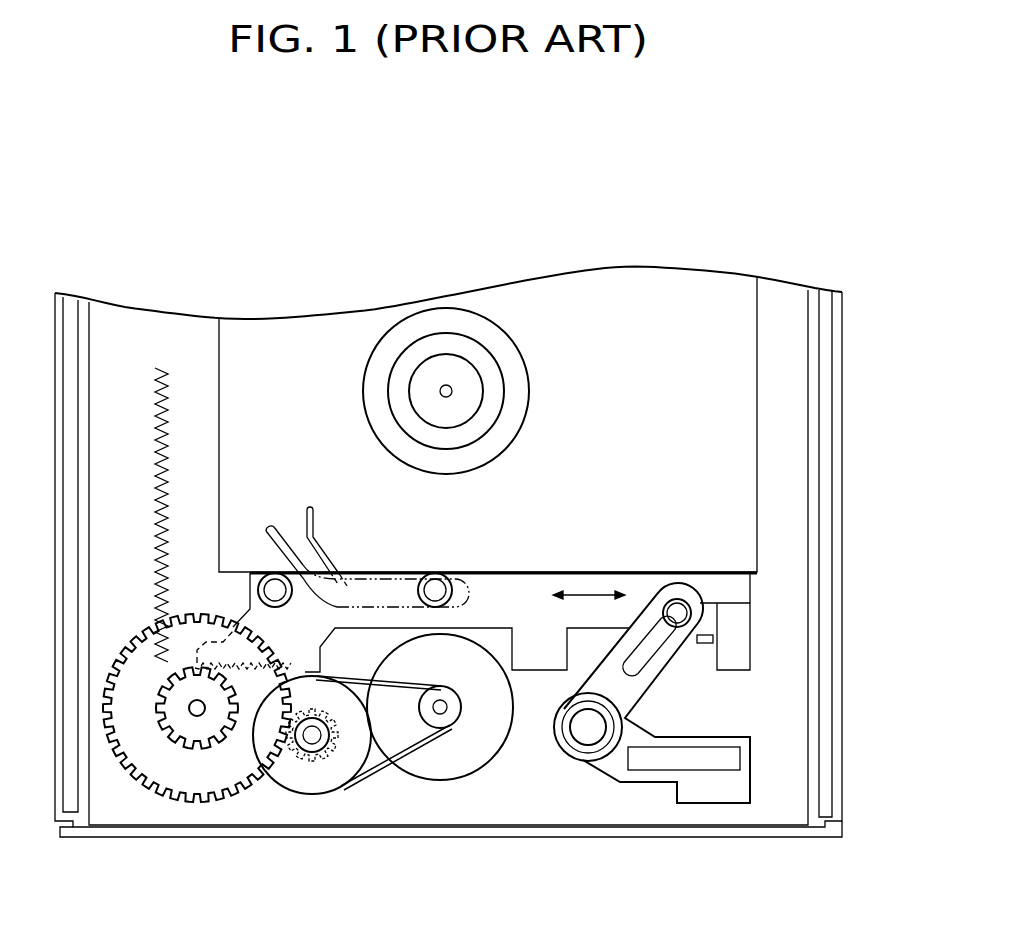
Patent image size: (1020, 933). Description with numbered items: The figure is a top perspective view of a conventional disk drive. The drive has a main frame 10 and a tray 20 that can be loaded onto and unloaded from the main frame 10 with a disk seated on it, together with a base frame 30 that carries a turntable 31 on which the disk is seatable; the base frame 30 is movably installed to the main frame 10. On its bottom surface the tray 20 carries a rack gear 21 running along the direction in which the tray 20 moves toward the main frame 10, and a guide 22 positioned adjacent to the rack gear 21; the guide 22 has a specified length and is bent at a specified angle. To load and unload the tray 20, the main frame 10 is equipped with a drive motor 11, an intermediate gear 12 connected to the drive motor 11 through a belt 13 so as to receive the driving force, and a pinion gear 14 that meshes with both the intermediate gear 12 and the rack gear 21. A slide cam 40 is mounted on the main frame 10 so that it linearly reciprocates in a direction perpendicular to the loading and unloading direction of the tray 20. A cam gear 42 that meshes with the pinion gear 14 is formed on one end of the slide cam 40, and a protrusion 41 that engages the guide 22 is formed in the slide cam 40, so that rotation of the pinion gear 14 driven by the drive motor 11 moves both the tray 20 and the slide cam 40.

The main frame 10 is at (781, 838).
The drive motor 11 is at (462, 768).
The intermediate gear 12 is at (309, 788).
The belt 13 is at (373, 767).
The pinion gear 14 is at (184, 790).
The tray 20 is at (703, 207).
The rack gear 21 is at (165, 430).
The guide 22 is at (310, 508).
The base frame 30 is at (640, 290).
The turntable 31 is at (441, 321).
The slide cam 40 is at (716, 580).
The protrusion 41 is at (436, 588).
The cam gear 42 is at (293, 700).